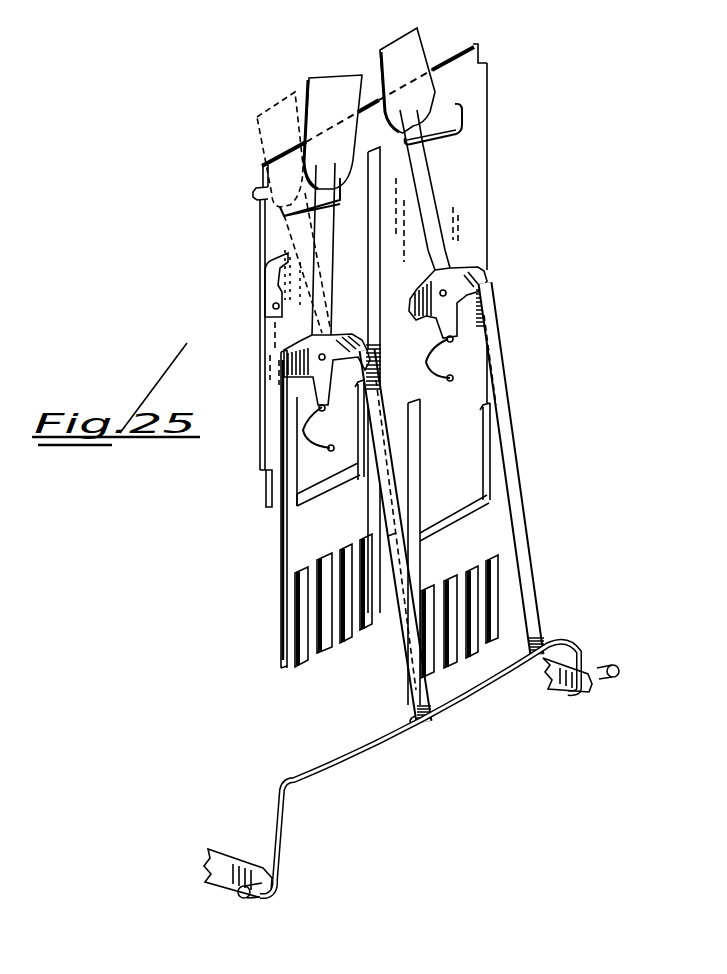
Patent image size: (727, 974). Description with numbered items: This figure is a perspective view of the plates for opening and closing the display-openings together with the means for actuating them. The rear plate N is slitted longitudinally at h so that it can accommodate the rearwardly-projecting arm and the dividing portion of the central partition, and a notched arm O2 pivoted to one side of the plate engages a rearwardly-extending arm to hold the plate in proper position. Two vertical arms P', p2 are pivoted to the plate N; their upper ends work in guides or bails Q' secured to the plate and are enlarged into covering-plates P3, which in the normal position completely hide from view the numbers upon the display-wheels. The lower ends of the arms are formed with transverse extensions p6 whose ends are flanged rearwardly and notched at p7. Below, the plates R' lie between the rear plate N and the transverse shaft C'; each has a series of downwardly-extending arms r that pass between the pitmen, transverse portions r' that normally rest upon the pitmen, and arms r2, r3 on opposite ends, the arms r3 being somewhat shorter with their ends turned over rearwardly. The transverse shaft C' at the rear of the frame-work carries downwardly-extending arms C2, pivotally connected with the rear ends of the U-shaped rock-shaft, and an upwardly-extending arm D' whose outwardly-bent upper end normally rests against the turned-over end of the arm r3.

The rear plate N is at (466, 181).
The notched arm O2 is at (255, 286).
The longitudinal slit h is at (381, 291).
The covering-plate P3 is at (346, 180).
The guide or bail Q' is at (377, 166).
The vertical arm P' is at (388, 417).
The transverse extension p6 is at (387, 341).
The notch p7 is at (423, 332).
The plate R' is at (385, 527).
The arm r2 is at (328, 484).
The arm r3 is at (490, 442).
The downwardly-extending arm r is at (339, 600).
The transverse portion r' is at (397, 613).
The vertical arm p2 is at (384, 537).
The upwardly-extending arm D' is at (523, 469).
The transverse shaft C' is at (447, 746).
The downwardly-extending arm C2 is at (275, 808).